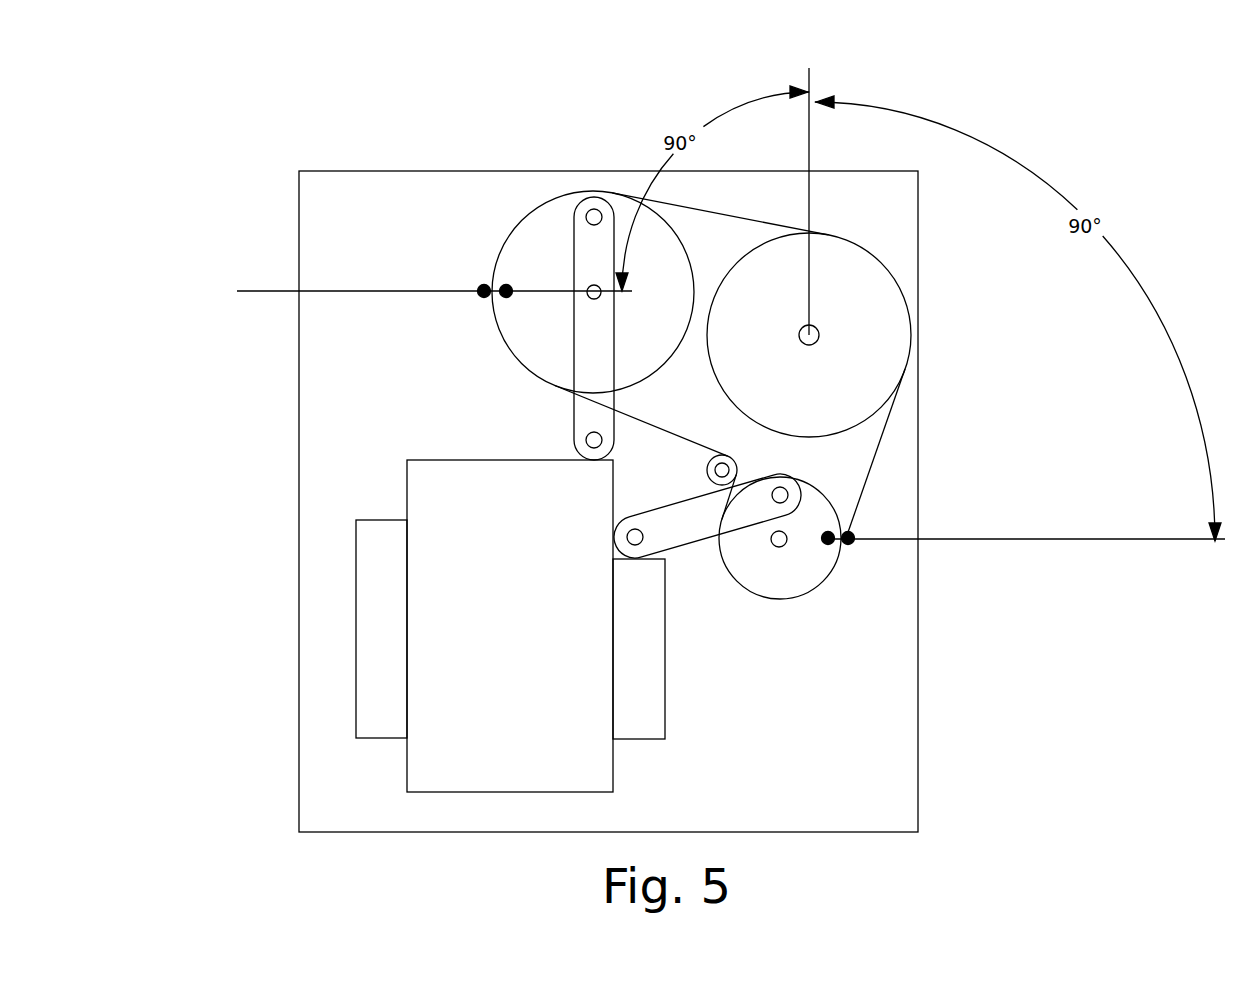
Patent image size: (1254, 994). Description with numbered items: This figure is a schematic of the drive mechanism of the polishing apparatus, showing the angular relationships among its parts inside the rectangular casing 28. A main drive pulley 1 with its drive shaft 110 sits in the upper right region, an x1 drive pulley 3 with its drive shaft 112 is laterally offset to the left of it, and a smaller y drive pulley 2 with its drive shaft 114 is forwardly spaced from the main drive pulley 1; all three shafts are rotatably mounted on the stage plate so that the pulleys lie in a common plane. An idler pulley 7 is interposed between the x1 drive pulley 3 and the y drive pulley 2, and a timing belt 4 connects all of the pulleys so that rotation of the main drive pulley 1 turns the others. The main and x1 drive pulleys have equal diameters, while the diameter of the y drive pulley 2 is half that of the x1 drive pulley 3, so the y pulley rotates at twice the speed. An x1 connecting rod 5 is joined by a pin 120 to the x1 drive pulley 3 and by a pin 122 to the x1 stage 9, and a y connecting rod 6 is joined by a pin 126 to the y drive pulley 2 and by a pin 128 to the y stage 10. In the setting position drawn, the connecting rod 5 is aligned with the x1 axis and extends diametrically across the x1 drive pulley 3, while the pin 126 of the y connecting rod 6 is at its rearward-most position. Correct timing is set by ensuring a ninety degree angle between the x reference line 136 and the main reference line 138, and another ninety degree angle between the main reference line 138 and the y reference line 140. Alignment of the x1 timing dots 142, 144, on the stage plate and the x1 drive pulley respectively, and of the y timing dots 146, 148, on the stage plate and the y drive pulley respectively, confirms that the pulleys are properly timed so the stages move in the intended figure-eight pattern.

The main drive pulley 1 is at (847, 258).
The y drive pulley 2 is at (838, 556).
The x1 drive pulley 3 is at (623, 207).
The timing belt 4 is at (875, 455).
The x1 connecting rod 5 is at (583, 342).
The y connecting rod 6 is at (703, 540).
The idler pulley 7 is at (708, 465).
The x1 stage 9 is at (402, 452).
The y stage 10 is at (665, 738).
The casing 28 is at (917, 245).
The drive shaft 110 is at (819, 335).
The drive shaft 112 is at (588, 288).
The drive shaft 114 is at (779, 547).
The pin 120 is at (593, 213).
The pin 122 is at (586, 441).
The pin 126 is at (786, 490).
The pin 128 is at (643, 545).
The x reference line 136 is at (370, 290).
The main reference line 138 is at (811, 82).
The y reference line 140 is at (1047, 542).
The x1 timing dot 142 is at (485, 295).
The x1 timing dot 144 is at (503, 288).
The y timing dot 146 is at (828, 545).
The y timing dot 148 is at (850, 533).